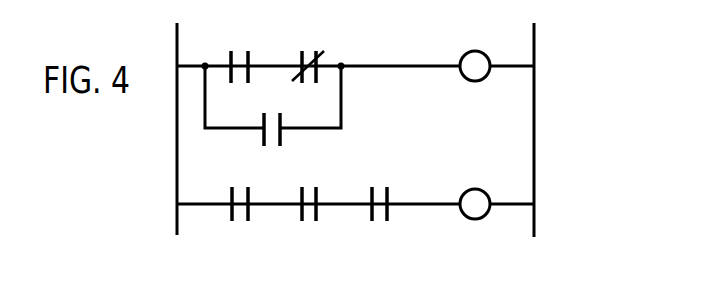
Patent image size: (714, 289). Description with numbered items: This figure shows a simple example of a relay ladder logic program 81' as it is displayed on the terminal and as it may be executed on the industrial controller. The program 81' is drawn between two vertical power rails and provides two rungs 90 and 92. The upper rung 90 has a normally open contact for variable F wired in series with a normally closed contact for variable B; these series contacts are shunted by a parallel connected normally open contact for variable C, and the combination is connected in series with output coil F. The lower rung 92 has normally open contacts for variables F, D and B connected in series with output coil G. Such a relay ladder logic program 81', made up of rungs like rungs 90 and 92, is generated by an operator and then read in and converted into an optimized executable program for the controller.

The rung 90 is at (380, 66).
The rung 92 is at (403, 204).
The relay ladder logic program 81' is at (395, 130).